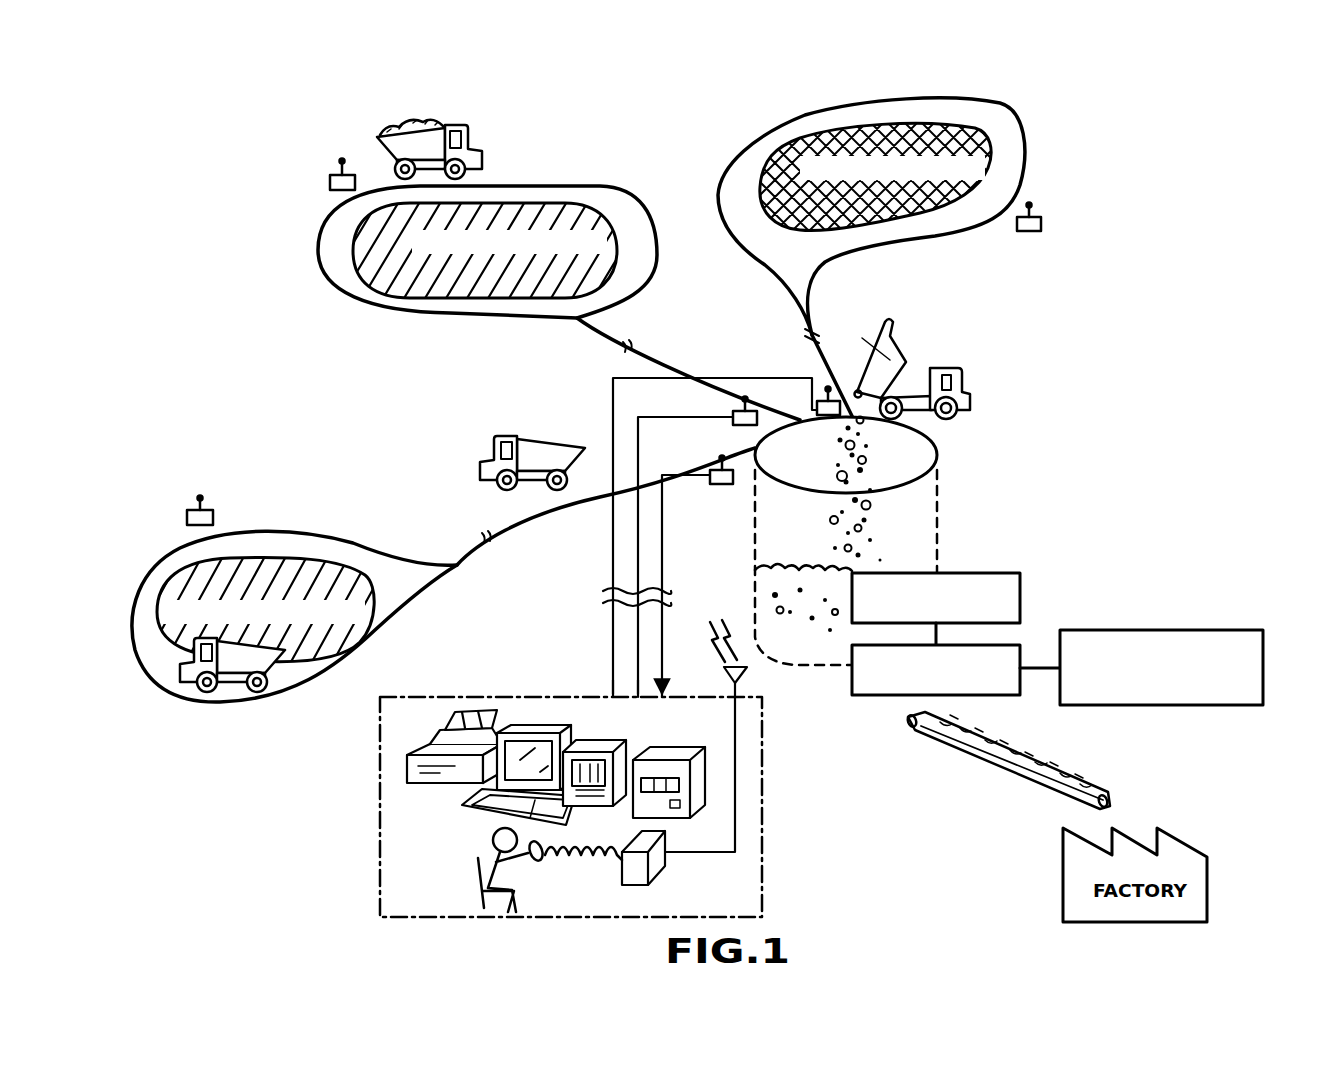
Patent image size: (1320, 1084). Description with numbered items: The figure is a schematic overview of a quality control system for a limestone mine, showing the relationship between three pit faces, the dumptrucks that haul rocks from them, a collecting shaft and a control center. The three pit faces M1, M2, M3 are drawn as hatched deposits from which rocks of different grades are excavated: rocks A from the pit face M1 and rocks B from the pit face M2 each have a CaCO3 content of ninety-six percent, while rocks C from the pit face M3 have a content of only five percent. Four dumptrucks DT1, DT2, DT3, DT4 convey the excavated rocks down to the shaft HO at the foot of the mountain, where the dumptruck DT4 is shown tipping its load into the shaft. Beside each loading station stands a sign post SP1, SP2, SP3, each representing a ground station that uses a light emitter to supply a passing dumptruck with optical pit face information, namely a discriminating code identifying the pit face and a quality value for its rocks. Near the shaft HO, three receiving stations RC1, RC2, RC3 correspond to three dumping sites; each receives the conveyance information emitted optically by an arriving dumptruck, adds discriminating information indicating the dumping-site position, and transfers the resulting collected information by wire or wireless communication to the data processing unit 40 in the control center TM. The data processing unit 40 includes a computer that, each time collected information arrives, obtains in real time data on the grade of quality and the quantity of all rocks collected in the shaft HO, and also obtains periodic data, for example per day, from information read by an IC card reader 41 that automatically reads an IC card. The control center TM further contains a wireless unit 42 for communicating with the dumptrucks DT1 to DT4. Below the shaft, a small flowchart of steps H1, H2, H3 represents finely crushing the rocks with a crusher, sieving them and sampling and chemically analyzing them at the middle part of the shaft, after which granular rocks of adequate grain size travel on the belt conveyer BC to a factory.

The dumptruck DT1 is at (178, 684).
The dumptruck DT2 is at (533, 444).
The dumptruck DT3 is at (485, 160).
The dumptruck DT4 is at (965, 390).
The sign post SP1 is at (214, 511).
The sign post SP2 is at (330, 183).
The sign post SP3 is at (1036, 232).
The pit face M1 is at (322, 553).
The pit face M2 is at (385, 284).
The pit face M3 is at (889, 224).
The receiving station RC1 is at (712, 487).
The receiving station RC2 is at (733, 424).
The receiving station RC3 is at (816, 398).
The shaft HO is at (920, 461).
The crushing step H1 is at (1005, 577).
The sieving step H2 is at (1020, 647).
The sampling step H3 is at (1232, 630).
The belt conveyer BC is at (1058, 767).
The control center TM is at (762, 793).
The data processing unit 40 is at (468, 818).
The IC card reader 41 is at (685, 748).
The wireless unit 42 is at (665, 862).